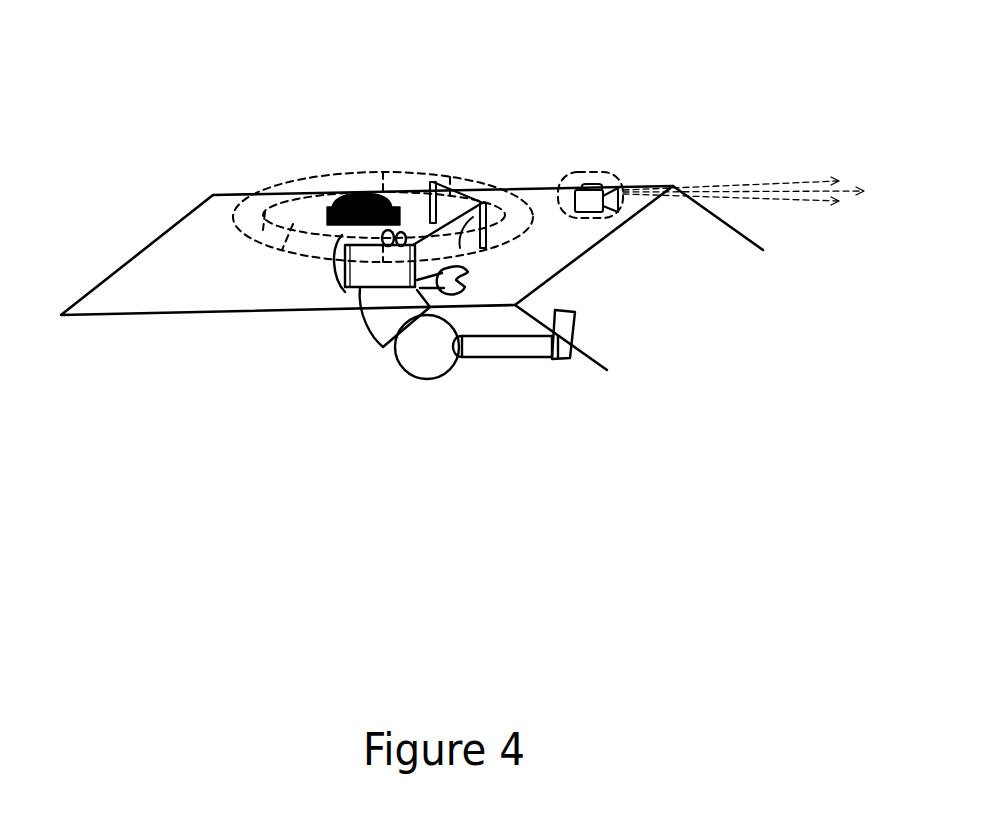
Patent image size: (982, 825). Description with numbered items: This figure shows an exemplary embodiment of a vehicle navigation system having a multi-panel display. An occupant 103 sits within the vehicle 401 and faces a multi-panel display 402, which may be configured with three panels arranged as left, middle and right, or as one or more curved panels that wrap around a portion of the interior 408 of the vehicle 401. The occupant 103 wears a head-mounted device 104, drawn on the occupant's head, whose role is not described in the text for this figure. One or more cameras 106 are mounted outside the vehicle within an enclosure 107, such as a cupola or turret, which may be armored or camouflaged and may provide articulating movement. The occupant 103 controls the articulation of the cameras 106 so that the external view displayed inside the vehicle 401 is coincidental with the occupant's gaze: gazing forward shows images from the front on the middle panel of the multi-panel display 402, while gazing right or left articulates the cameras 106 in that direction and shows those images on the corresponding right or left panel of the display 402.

The occupant 103 is at (380, 318).
The head mounted display 104 is at (336, 192).
The cameras 106 is at (598, 157).
The enclosure 107 is at (622, 177).
The vehicle 401 is at (157, 293).
The multi-panel display 402 is at (449, 195).
The interior 408 is at (416, 168).